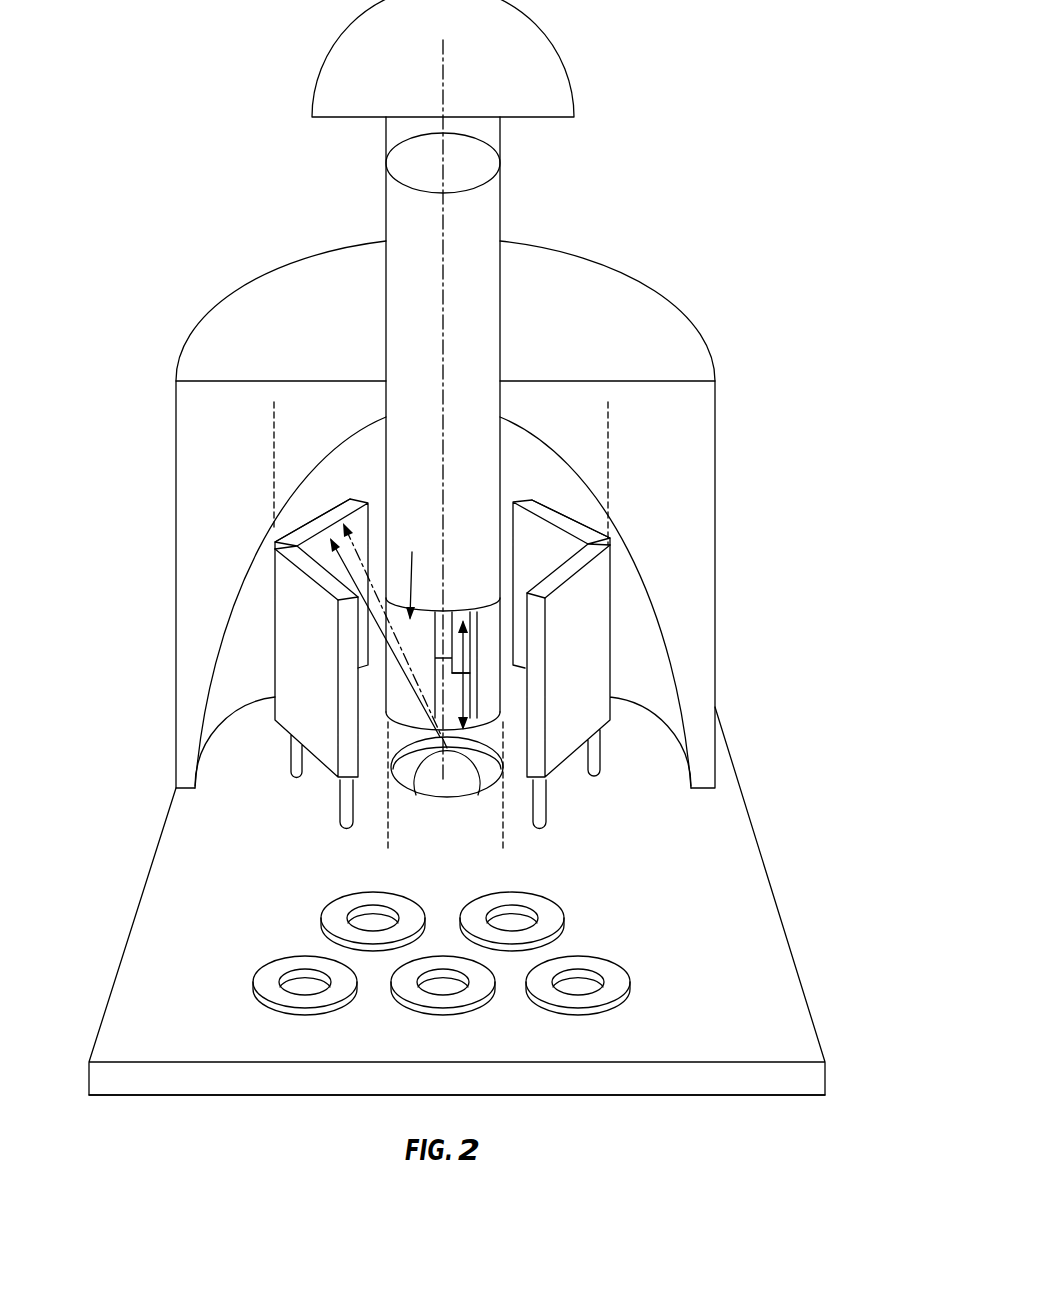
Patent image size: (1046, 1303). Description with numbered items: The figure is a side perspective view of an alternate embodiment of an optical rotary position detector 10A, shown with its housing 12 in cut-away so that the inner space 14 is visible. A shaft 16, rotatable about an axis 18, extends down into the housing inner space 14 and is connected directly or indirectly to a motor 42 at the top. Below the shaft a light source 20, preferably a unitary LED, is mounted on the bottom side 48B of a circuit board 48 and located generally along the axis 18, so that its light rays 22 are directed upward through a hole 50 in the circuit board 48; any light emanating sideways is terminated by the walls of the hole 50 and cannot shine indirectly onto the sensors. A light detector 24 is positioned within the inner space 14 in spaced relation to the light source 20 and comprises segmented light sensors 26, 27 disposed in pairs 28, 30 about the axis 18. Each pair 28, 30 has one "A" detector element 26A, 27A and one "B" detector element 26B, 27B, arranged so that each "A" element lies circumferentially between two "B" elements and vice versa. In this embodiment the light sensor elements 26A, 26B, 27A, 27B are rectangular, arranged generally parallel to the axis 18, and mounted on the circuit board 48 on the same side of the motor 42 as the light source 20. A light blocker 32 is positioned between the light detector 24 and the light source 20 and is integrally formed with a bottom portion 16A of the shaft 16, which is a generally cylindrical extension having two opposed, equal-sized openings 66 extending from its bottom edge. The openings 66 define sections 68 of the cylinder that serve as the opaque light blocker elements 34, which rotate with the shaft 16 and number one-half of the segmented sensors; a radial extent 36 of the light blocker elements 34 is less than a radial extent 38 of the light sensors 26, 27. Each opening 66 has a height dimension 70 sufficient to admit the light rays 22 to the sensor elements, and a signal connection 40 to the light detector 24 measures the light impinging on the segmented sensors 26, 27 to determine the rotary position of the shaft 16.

The rotary position detector 10A is at (642, 252).
The housing 12 is at (718, 398).
The inner space 14 is at (635, 603).
The shaft 16 is at (481, 222).
The bottom portion of the shaft 16A is at (395, 567).
The axis 18 is at (445, 280).
The light source 20 is at (447, 785).
The light rays 22 is at (338, 570).
The light detector 24 is at (310, 735).
The segmented light sensor 26 is at (574, 513).
The "A" detector element 26A is at (557, 540).
The "B" detector element 26B is at (583, 649).
The segmented light sensor 27 is at (332, 508).
The "A" detector element 27A is at (305, 685).
The "B" detector element 27B is at (308, 528).
The pair of light sensors 28 is at (618, 683).
The pair of light sensors 30 is at (263, 722).
The light blocker 32 is at (416, 570).
The light blocker elements 34 is at (425, 635).
The radial extent of the light blocker elements 36 is at (505, 804).
The radial extent of the light sensors 38 is at (610, 443).
The signal connection 40 is at (618, 930).
The motor 42 is at (540, 67).
The circuit board 48 is at (701, 851).
The bottom side of the circuit board 48B is at (571, 1095).
The hole 50 is at (400, 780).
The openings 66 is at (467, 708).
The sections of the cylindrical portion 68 is at (405, 708).
The height dimension 70 is at (465, 652).